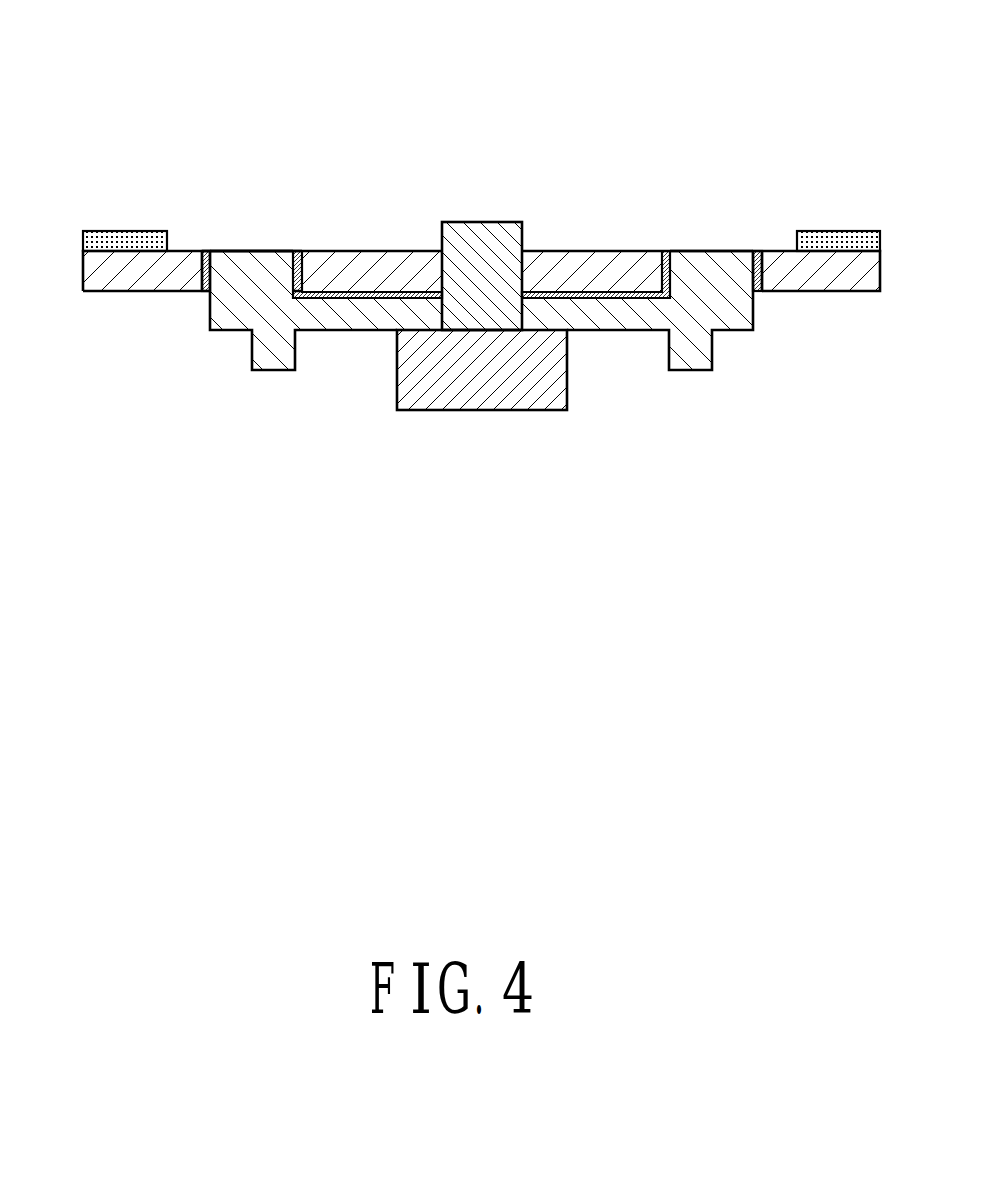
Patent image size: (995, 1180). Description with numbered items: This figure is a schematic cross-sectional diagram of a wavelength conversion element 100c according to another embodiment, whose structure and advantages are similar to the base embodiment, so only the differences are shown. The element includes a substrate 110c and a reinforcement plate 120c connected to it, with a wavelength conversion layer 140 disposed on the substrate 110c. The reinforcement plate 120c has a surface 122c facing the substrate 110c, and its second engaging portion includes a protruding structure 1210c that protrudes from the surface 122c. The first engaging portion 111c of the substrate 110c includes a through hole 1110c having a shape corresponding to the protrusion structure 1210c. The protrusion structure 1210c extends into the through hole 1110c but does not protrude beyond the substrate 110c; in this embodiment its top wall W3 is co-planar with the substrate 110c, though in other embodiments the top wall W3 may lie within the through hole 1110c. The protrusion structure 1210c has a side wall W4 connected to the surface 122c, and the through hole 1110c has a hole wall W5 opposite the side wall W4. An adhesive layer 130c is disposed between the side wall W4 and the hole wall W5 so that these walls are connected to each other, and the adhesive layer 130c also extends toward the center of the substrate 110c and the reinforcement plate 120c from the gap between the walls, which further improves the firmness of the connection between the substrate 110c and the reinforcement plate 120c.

The wavelength conversion element 100c is at (138, 36).
The substrate 110c is at (812, 273).
The through hole 1110c is at (203, 250).
The first engaging portion 111c is at (482, 271).
The reinforcement plate 120c is at (350, 317).
The protruding structure 1210c is at (263, 270).
The surface 122c is at (603, 300).
The adhesive layer 130c is at (203, 292).
The wavelength conversion layer 140 is at (83, 245).
The top wall W3 is at (262, 250).
The side wall W4 is at (222, 252).
The hole wall W5 is at (305, 253).